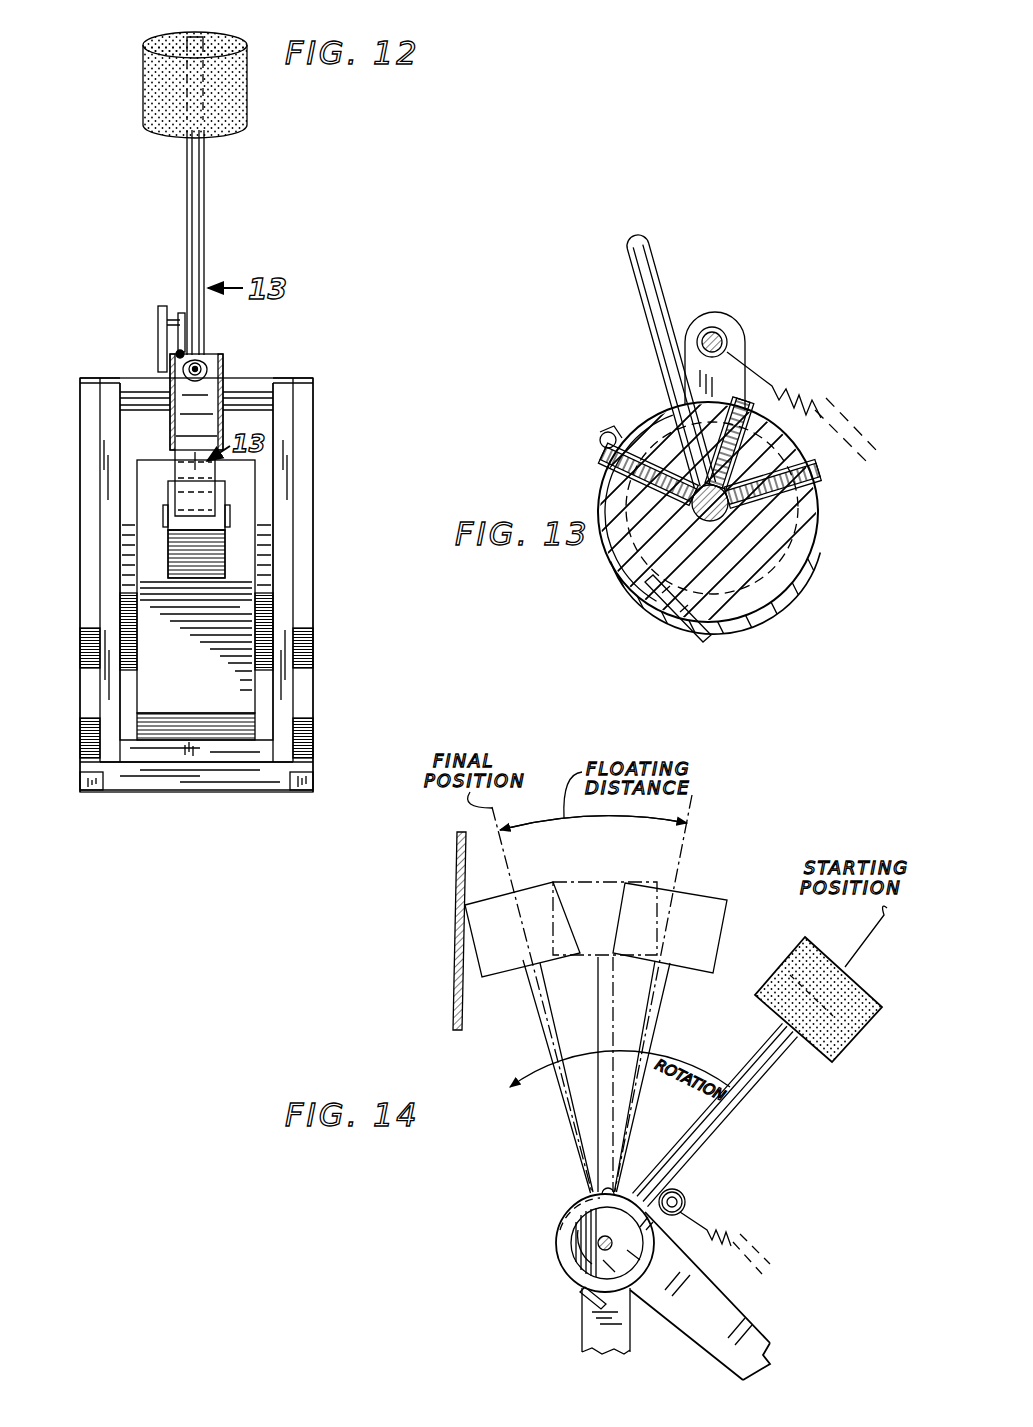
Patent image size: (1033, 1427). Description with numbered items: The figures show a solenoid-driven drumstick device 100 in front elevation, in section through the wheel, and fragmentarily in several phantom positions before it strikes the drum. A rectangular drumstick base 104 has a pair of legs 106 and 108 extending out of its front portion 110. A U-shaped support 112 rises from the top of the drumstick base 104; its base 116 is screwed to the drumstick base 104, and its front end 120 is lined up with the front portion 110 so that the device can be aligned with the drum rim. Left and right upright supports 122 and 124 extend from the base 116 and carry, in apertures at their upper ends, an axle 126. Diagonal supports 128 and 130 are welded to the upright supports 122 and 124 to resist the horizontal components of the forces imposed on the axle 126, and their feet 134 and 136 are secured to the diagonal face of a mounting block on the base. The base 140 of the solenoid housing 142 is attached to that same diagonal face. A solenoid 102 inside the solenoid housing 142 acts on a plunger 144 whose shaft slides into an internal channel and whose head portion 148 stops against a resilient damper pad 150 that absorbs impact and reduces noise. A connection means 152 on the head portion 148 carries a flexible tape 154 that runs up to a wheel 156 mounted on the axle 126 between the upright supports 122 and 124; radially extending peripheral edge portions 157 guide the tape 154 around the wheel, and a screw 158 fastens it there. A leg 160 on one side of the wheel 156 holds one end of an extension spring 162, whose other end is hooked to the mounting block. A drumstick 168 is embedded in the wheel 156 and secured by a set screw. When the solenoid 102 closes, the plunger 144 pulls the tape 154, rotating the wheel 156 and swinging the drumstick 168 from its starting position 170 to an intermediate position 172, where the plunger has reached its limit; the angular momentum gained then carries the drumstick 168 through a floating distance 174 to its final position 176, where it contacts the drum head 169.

In FIG. 12, the drumstick device 100 is at (322, 666).
In FIG. 12, the solenoid 102 is at (130, 622).
In FIG. 12, the drumstick base 104 is at (141, 795).
In FIG. 12, the leg 106 is at (82, 792).
In FIG. 12, the leg 108 is at (312, 790).
In FIG. 12, the front portion 110 is at (192, 792).
In FIG. 12, the U-shaped support 112 is at (291, 375).
In FIG. 12, the base of the support 116 is at (240, 750).
In FIG. 12, the front end of the support 120 is at (130, 757).
In FIG. 12, the left upright support 122 is at (112, 706).
In FIG. 14, the left upright support 122 is at (592, 1337).
In FIG. 12, the right upright support 124 is at (285, 612).
In FIG. 12, the axle 126 is at (250, 398).
In FIG. 13, the axle 126 is at (696, 507).
In FIG. 14, the axle 126 is at (598, 1243).
In FIG. 12, the diagonal support 128 is at (80, 405).
In FIG. 14, the diagonal support 128 is at (712, 1318).
In FIG. 12, the diagonal support 130 is at (300, 415).
In FIG. 12, the foot of diagonal support 134 is at (92, 641).
In FIG. 12, the foot of diagonal support 136 is at (300, 640).
In FIG. 12, the base of the solenoid housing 140 is at (250, 735).
In FIG. 12, the solenoid housing 142 is at (190, 700).
In FIG. 12, the plunger 144 is at (232, 534).
In FIG. 12, the head portion 148 is at (185, 537).
In FIG. 12, the damper pad 150 is at (177, 580).
In FIG. 12, the connection means 152 is at (222, 508).
In FIG. 12, the tape 154 is at (190, 487).
In FIG. 13, the tape 154 is at (698, 647).
In FIG. 14, the tape 154 is at (586, 1294).
In FIG. 12, the wheel 156 is at (182, 385).
In FIG. 13, the wheel 156 is at (816, 540).
In FIG. 14, the wheel 156 is at (657, 1246).
In FIG. 12, the peripheral edge portions 157 is at (223, 358).
In FIG. 13, the peripheral edge portions 157 is at (778, 614).
In FIG. 12, the screw 158 is at (200, 361).
In FIG. 13, the screw 158 is at (606, 432).
In FIG. 14, the screw 158 is at (613, 1184).
In FIG. 12, the leg 160 is at (158, 314).
In FIG. 13, the leg 160 is at (735, 338).
In FIG. 14, the leg 160 is at (687, 1200).
In FIG. 12, the extension spring 162 is at (176, 349).
In FIG. 13, the extension spring 162 is at (806, 408).
In FIG. 14, the extension spring 162 is at (734, 1240).
In FIG. 12, the drumstick 168 is at (211, 193).
In FIG. 13, the drumstick 168 is at (660, 276).
In FIG. 14, the drumstick 168 is at (754, 1090).
In FIG. 14, the drum head 169 is at (456, 878).
In FIG. 14, the starting position 170 is at (853, 960).
In FIG. 14, the intermediate position 172 is at (695, 824).
In FIG. 14, the floating distance 174 is at (603, 826).
In FIG. 14, the final position 176 is at (513, 887).